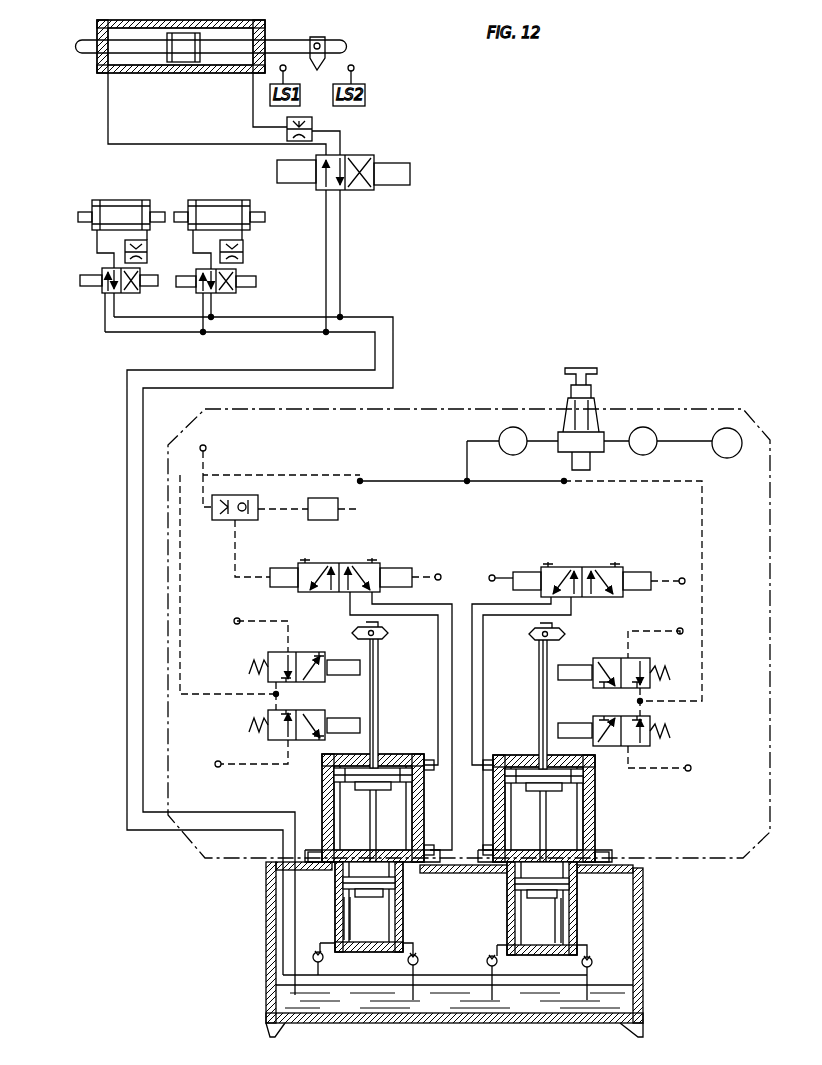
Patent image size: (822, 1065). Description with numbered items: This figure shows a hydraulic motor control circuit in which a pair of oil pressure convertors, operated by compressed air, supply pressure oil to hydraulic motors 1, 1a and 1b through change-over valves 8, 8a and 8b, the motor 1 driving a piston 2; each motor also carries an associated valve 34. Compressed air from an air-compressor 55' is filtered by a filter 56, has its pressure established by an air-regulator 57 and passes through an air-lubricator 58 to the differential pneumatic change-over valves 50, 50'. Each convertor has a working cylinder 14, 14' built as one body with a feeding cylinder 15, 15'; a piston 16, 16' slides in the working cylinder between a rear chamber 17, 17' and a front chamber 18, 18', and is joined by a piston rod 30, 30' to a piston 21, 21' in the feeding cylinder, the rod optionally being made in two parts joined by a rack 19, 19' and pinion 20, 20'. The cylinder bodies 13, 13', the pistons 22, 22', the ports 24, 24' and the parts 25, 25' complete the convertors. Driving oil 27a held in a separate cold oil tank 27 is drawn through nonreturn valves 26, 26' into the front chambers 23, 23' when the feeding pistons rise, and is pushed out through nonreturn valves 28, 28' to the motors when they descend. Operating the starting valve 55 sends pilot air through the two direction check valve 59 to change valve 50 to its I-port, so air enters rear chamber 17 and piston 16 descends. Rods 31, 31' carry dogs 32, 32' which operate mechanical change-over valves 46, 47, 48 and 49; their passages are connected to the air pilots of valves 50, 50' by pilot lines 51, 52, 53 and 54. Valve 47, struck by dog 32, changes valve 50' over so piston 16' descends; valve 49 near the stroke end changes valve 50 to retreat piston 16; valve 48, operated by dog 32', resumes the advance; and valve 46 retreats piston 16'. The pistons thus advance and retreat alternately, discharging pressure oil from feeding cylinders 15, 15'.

The hydraulic motor 1 is at (146, 22).
The piston 2 is at (186, 33).
The hydraulic motor 1a is at (228, 200).
The hydraulic motor 1b is at (120, 200).
The change-over valve 8 is at (377, 190).
The valve 8a is at (236, 290).
The valve 8b is at (140, 290).
The flow control valve 34 is at (312, 120).
The air-lubricator 58 is at (513, 427).
The air-regulator 57 is at (598, 405).
The filter 56 is at (645, 427).
The air-compressor 55' is at (734, 413).
The starting valve 55 is at (326, 481).
The two direction check valve 59 is at (235, 495).
The pilot passage 54 is at (206, 448).
The pilot passage 53 is at (439, 574).
The pilot passage 52 is at (492, 575).
The pilot passage 51 is at (683, 578).
The differential pneumatic change-over valve 50 is at (341, 563).
The differential pneumatic change-over valve 50' is at (582, 567).
The mechanical change-over valve 47 is at (322, 682).
The mechanical change-over valve 49 is at (322, 712).
The mechanical change-over valve 48 is at (597, 688).
The mechanical change-over valve 46 is at (597, 718).
The dog 32 is at (390, 631).
The rod 31 is at (393, 702).
The dog 32' is at (529, 633).
The rod 31' is at (521, 703).
The air cylinder 13 is at (365, 808).
The piston 16 is at (374, 760).
The rear chamber 17 is at (307, 779).
The front chamber 18 is at (310, 845).
The rack 19 is at (438, 775).
The working cylinder 14 is at (429, 807).
The pinion 20 is at (436, 840).
The piston rod 30 is at (360, 833).
The air cylinder 13' is at (561, 808).
The piston 16' is at (544, 762).
The rear chamber 17' is at (619, 785).
The front chamber 18' is at (619, 843).
The rack 19' is at (479, 775).
The working cylinder 14' is at (488, 807).
The pinion 20' is at (479, 840).
The piston rod 30' is at (559, 834).
The feeding cylinder 15 is at (390, 907).
The piston 22 is at (346, 883).
The piston 21 is at (340, 900).
The front chamber 23 is at (324, 918).
The outlet port 24 is at (424, 930).
The housing / check valve 25 is at (469, 648).
The nonreturn valve 26 is at (426, 965).
The nonreturn valve 28 is at (325, 1001).
The feeding cylinder 15' is at (523, 908).
The piston 22' is at (567, 883).
The piston 21' is at (573, 901).
The front chamber 23' is at (587, 920).
The outlet port 24' is at (598, 943).
The check valve 25' is at (516, 964).
The nonreturn valve 26' is at (602, 977).
The nonreturn valve 28' is at (497, 1003).
The oil tank 27 is at (643, 940).
The driving oil 27a is at (620, 1000).